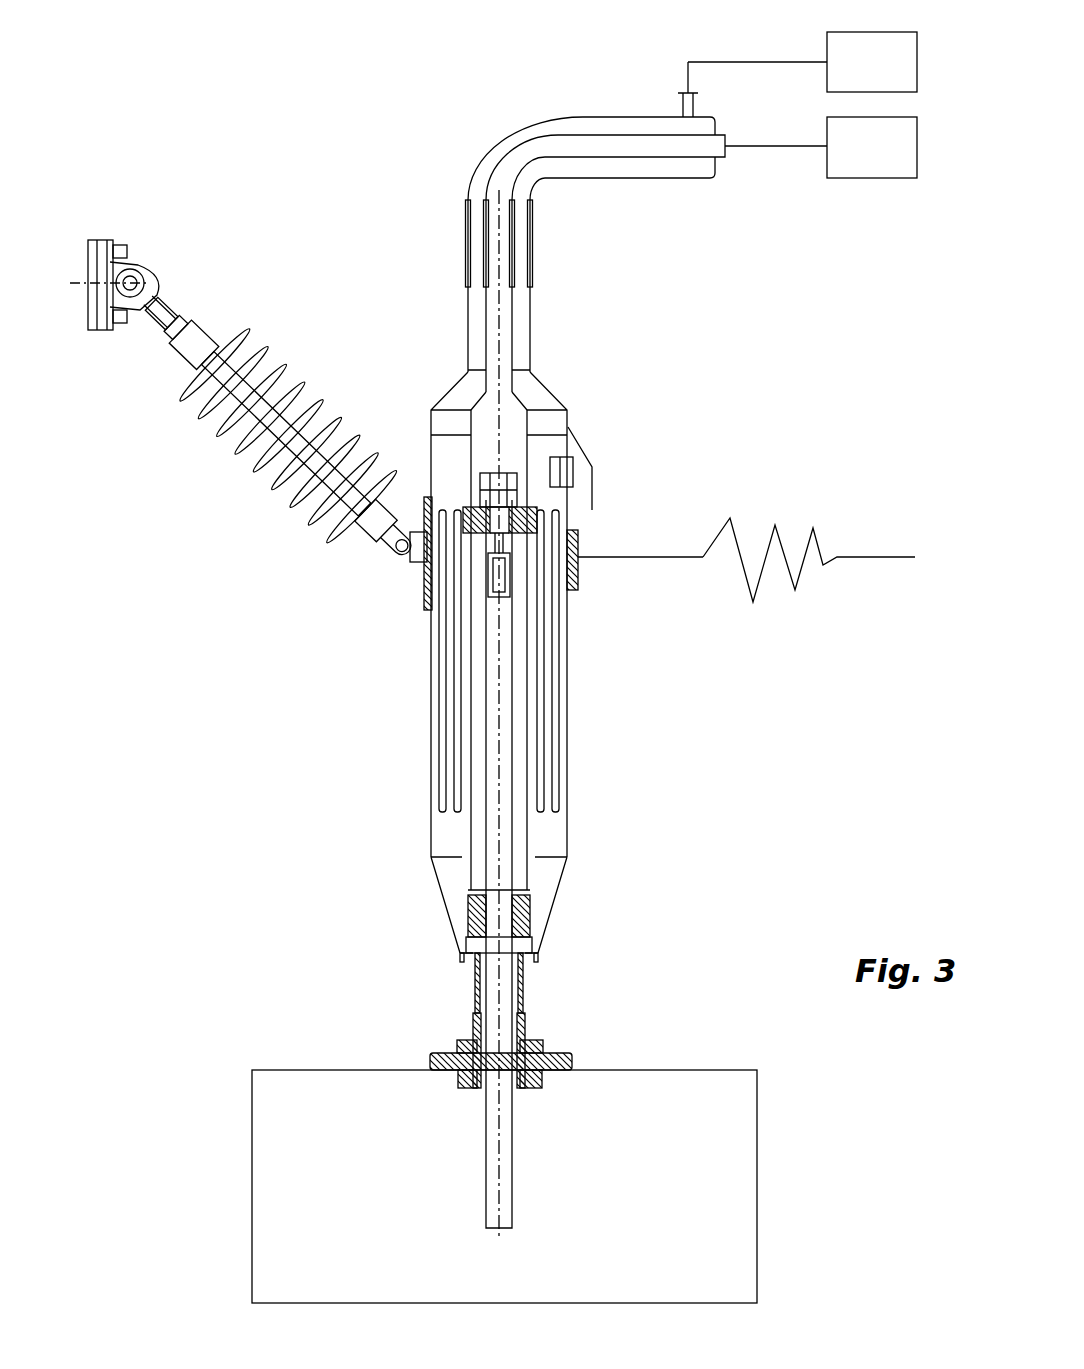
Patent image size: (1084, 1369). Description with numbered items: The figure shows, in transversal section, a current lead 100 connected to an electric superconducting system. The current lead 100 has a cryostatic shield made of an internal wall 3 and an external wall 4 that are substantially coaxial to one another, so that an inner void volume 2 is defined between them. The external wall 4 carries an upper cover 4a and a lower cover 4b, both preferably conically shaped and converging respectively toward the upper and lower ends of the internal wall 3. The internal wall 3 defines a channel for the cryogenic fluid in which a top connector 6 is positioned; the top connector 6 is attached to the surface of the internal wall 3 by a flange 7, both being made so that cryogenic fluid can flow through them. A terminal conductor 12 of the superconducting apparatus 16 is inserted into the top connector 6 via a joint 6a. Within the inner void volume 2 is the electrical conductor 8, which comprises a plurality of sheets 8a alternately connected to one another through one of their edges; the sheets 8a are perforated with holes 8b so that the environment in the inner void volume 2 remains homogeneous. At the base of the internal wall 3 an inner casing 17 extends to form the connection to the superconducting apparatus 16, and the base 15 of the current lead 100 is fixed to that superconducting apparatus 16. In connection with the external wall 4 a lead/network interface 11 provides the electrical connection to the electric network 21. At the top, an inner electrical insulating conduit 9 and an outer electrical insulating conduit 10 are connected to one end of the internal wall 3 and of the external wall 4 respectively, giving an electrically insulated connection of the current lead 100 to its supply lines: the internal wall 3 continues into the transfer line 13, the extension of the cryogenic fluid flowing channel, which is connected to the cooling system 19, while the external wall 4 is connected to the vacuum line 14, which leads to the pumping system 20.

The inner void volume 2 is at (445, 480).
The internal wall 3 is at (528, 845).
The external wall 4 is at (430, 830).
The upper cover 4a is at (553, 397).
The lower cover 4b is at (436, 885).
The top connector 6 is at (567, 513).
The joint 6a is at (503, 587).
The flange 7 is at (533, 493).
The electrical conductor 8 is at (455, 648).
The sheets 8a is at (548, 735).
The holes 8b is at (560, 672).
The inner electrical insulating conduit 9 is at (510, 248).
The outer electrical insulating conduit 10 is at (528, 272).
The lead/network interface 11 is at (577, 547).
The terminal conductor 12 is at (507, 993).
The transfer line 13 is at (622, 147).
The vacuum line 14 is at (483, 163).
The base 15 is at (543, 1038).
The superconducting apparatus 16 is at (277, 1228).
The inner casing 17 is at (528, 908).
The cooling system 19 is at (850, 163).
The pumping system 20 is at (840, 52).
The electric network 21 is at (825, 538).
The current lead 100 is at (497, 787).